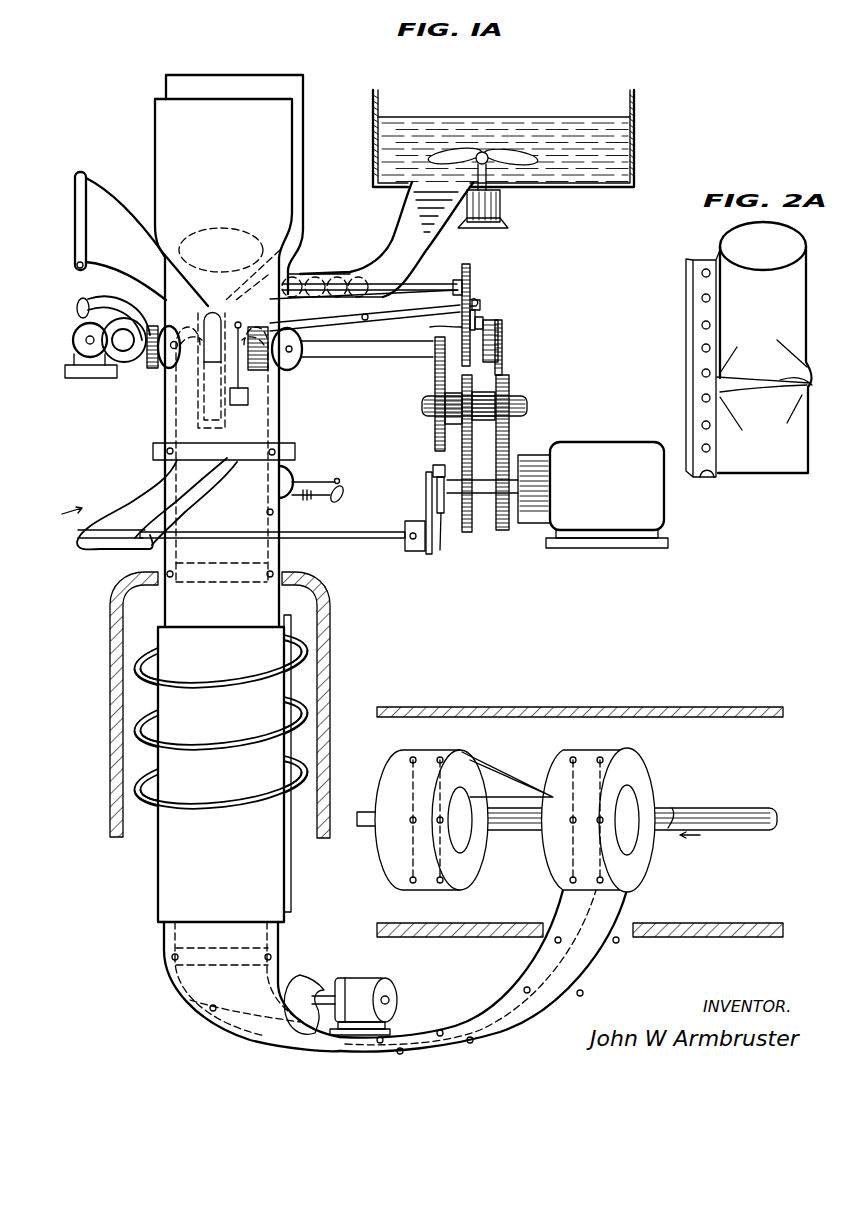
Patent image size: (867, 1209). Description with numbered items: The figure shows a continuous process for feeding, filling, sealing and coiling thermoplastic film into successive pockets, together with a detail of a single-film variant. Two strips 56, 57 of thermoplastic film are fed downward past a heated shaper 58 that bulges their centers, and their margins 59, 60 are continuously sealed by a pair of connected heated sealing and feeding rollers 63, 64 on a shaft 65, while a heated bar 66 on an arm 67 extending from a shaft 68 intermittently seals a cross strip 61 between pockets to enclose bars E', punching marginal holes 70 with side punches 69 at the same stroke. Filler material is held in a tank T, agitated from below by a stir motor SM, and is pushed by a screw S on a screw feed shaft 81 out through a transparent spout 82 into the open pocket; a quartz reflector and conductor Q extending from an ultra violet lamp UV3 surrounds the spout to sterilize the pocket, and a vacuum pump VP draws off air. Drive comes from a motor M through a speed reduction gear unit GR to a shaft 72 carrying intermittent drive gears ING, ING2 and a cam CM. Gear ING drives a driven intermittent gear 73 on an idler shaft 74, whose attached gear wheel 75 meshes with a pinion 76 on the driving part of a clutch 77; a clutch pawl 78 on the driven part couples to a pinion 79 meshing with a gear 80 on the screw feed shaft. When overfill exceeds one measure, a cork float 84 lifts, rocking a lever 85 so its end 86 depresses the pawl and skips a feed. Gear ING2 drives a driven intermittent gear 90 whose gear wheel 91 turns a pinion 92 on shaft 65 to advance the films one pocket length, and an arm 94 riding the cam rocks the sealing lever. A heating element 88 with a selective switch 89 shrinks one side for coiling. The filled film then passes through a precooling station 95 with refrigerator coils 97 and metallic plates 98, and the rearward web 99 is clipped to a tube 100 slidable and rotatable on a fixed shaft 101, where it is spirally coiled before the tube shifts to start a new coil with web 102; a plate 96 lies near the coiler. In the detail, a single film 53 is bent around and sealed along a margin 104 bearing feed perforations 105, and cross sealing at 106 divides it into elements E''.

In FIG. 1A, the strip 56 is at (166, 78).
In FIG. 1A, the strip 57 is at (155, 112).
In FIG. 1A, the heated shaper 58 is at (258, 232).
In FIG. 1A, the spout 82 is at (292, 244).
In FIG. 1A, the cork float 84 is at (250, 398).
In FIG. 1A, the lever end 86 is at (472, 300).
In FIG. 1A, the heated sealing and feeding roller 63 is at (152, 366).
In FIG. 1A, the heated sealing and feeding roller 64 is at (283, 366).
In FIG. 1A, the shaft 65 is at (345, 355).
In FIG. 1A, the lever 85 is at (338, 312).
In FIG. 1A, the screw S is at (328, 277).
In FIG. 1A, the screw feed shaft 81 is at (408, 284).
In FIG. 1A, the tank T is at (638, 146).
In FIG. 1A, the stir motor SM is at (504, 212).
In FIG. 1A, the gear 80 is at (470, 268).
In FIG. 1A, the clutch pawl 78 is at (480, 318).
In FIG. 1A, the clutch 77 is at (482, 326).
In FIG. 1A, the pinion 76 is at (502, 330).
In FIG. 1A, the pinion 79 is at (435, 326).
In FIG. 1A, the pinion 92 is at (434, 360).
In FIG. 1A, the gear wheel 91 is at (434, 424).
In FIG. 1A, the driven intermittent gear 90 is at (468, 388).
In FIG. 1A, the intermittent drive gear ING2 is at (470, 532).
In FIG. 1A, the idler shaft 74 is at (520, 402).
In FIG. 1A, the gear wheel 75 is at (507, 376).
In FIG. 1A, the driven intermittent gear 73 is at (510, 432).
In FIG. 1A, the intermittent drive gear ING is at (503, 520).
In FIG. 1A, the shaft 72 is at (484, 493).
In FIG. 1A, the speed reduction gear unit GR is at (534, 489).
In FIG. 1A, the motor M is at (607, 495).
In FIG. 1A, the cam CM is at (440, 550).
In FIG. 1A, the arm 94 is at (410, 507).
In FIG. 1A, the shaft 68 is at (338, 539).
In FIG. 1A, the side punch 69 is at (276, 450).
In FIG. 1A, the heated bar 66 is at (297, 470).
In FIG. 1A, the heating element 88 is at (293, 478).
In FIG. 1A, the selective switch 89 is at (345, 494).
In FIG. 1A, the bar E' is at (197, 746).
In FIG. 1A, the arm 67 is at (132, 488).
In FIG. 1A, the marginal hole 70 is at (273, 512).
In FIG. 1A, the vacuum pump VP is at (84, 339).
In FIG. 1A, the ultra violet lamp UV3 is at (74, 176).
In FIG. 1A, the quartz reflector and conductor Q is at (116, 202).
In FIG. 1A, the precooling station 95 is at (110, 712).
In FIG. 1A, the refrigerator coils 97 is at (145, 812).
In FIG. 1A, the metallic plates 98 is at (167, 862).
In FIG. 1A, the margin 59 is at (170, 980).
In FIG. 1A, the margin 60 is at (276, 932).
In FIG. 1A, the cross strip 61 is at (230, 956).
In FIG. 1A, the web 99 is at (478, 1043).
In FIG. 1A, the plate 96 is at (604, 706).
In FIG. 1A, the fixed shaft 101 is at (735, 828).
In FIG. 1A, the tube 100 is at (512, 822).
In FIG. 1A, the web 102 is at (503, 775).
In FIG. 2A, the element E'' is at (776, 347).
In FIG. 2A, the single film 53 is at (730, 240).
In FIG. 2A, the margin 104 is at (698, 339).
In FIG. 2A, the feed perforations 105 is at (702, 307).
In FIG. 2A, the cross sealing 106 is at (812, 385).